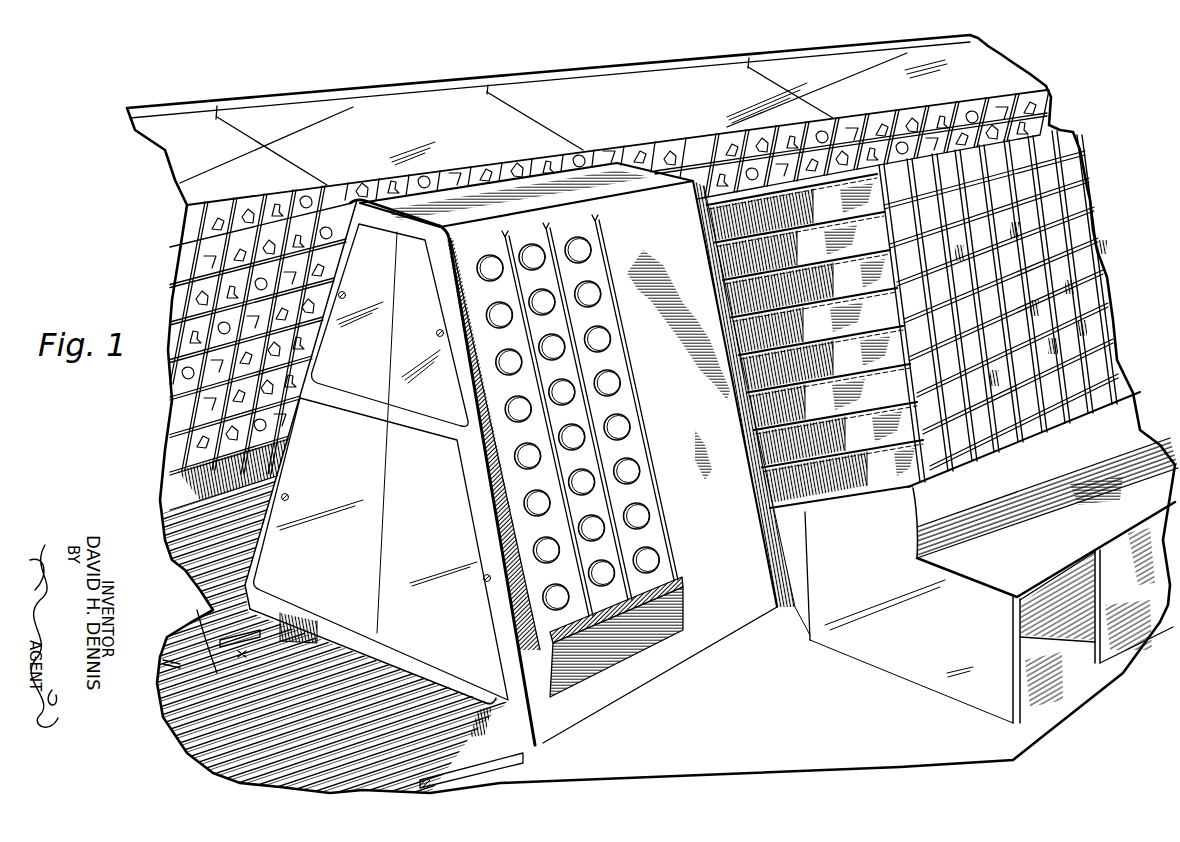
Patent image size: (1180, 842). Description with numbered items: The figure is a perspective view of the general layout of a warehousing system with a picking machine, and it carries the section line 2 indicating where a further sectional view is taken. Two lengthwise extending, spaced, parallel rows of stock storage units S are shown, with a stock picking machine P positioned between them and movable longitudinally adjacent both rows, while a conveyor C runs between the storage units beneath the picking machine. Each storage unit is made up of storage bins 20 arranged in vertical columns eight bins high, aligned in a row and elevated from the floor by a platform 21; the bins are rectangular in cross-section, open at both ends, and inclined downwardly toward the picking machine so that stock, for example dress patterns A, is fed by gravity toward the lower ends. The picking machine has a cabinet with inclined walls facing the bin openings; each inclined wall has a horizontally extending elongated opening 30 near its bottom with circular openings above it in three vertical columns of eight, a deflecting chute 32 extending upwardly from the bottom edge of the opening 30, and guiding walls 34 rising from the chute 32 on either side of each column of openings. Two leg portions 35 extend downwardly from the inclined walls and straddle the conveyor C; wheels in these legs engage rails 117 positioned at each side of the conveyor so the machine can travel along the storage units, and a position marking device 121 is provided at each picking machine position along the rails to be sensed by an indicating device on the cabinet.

The storage bins 20 is at (232, 256).
The platform 21 is at (917, 647).
The elongated opening 30 is at (660, 580).
The deflecting chute 32 is at (597, 647).
The guiding walls 34 is at (620, 457).
The leg portions 35 is at (262, 576).
The rails 117 is at (240, 654).
The position marking device 121 is at (167, 663).
The stock storage units S is at (354, 122).
The stock picking machine P is at (627, 203).
The conveyor C is at (197, 632).
The dress patterns A is at (372, 757).
The section line 2- 2 is at (575, 128).